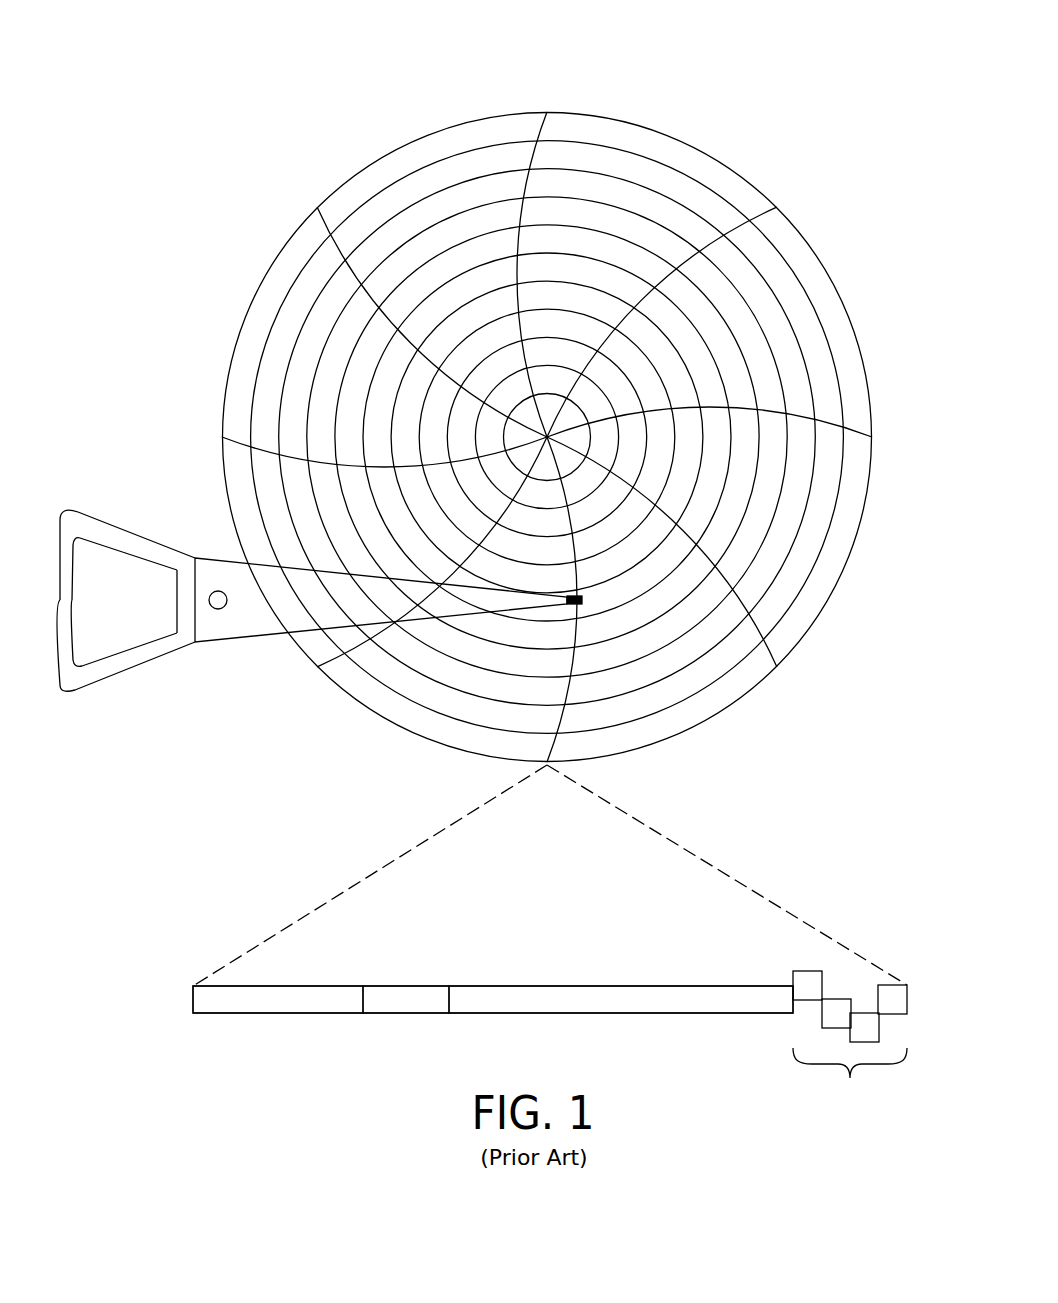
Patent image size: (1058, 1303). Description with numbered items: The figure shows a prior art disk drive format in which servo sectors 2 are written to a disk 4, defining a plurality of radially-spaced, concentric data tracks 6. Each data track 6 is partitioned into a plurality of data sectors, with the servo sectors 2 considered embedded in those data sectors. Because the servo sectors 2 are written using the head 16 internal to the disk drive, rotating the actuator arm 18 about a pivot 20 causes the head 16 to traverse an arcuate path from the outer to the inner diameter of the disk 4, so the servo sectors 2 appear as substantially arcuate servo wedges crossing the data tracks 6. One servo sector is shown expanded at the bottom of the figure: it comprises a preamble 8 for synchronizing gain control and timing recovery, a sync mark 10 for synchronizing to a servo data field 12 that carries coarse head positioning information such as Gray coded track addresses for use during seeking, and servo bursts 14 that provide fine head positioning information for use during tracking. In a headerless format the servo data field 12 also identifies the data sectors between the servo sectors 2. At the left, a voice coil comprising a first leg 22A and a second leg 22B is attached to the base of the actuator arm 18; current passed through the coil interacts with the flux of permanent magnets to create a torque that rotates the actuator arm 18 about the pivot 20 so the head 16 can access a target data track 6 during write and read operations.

The servo sectors 2 is at (407, 840).
The disk 4 is at (307, 117).
The data tracks 6 is at (657, 178).
The preamble 8 is at (258, 1014).
The sync mark 10 is at (402, 1014).
The servo data field 12 is at (607, 1014).
The servo bursts 14 is at (552, 1005).
The head 16 is at (583, 590).
The actuator arm 18 is at (235, 647).
The pivot 20 is at (227, 600).
The first leg 22A is at (115, 530).
The second leg 22B is at (122, 669).